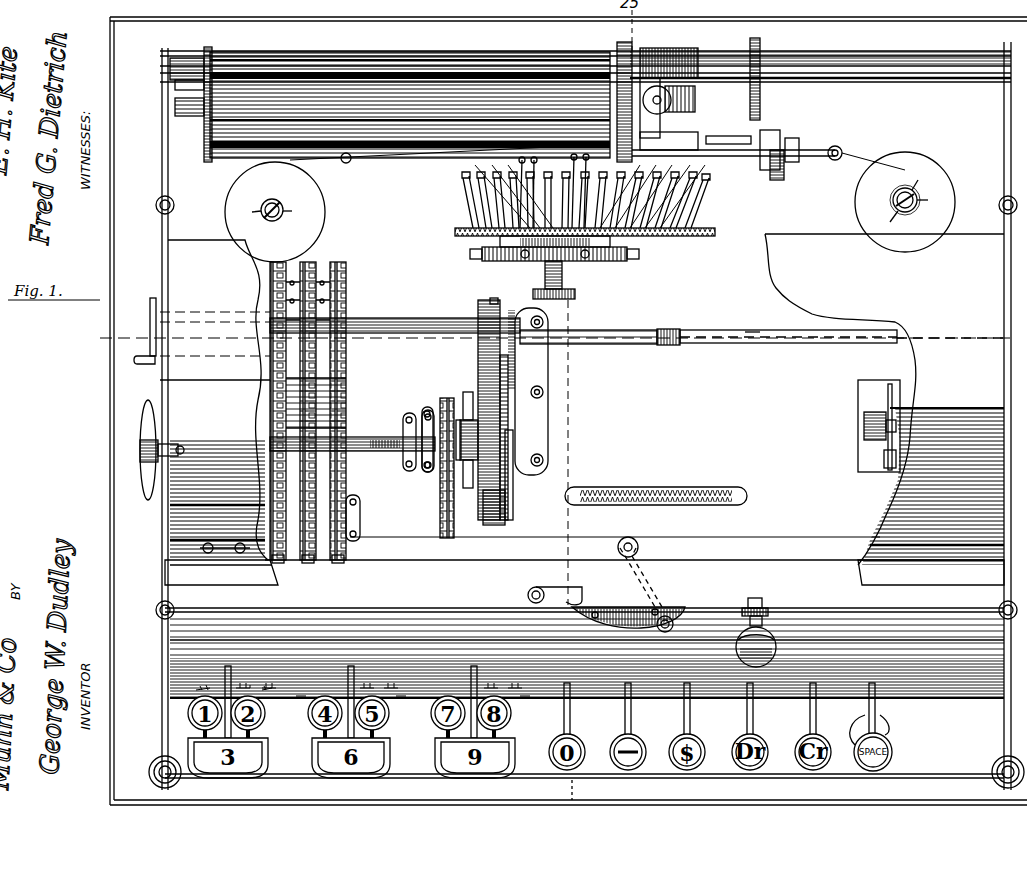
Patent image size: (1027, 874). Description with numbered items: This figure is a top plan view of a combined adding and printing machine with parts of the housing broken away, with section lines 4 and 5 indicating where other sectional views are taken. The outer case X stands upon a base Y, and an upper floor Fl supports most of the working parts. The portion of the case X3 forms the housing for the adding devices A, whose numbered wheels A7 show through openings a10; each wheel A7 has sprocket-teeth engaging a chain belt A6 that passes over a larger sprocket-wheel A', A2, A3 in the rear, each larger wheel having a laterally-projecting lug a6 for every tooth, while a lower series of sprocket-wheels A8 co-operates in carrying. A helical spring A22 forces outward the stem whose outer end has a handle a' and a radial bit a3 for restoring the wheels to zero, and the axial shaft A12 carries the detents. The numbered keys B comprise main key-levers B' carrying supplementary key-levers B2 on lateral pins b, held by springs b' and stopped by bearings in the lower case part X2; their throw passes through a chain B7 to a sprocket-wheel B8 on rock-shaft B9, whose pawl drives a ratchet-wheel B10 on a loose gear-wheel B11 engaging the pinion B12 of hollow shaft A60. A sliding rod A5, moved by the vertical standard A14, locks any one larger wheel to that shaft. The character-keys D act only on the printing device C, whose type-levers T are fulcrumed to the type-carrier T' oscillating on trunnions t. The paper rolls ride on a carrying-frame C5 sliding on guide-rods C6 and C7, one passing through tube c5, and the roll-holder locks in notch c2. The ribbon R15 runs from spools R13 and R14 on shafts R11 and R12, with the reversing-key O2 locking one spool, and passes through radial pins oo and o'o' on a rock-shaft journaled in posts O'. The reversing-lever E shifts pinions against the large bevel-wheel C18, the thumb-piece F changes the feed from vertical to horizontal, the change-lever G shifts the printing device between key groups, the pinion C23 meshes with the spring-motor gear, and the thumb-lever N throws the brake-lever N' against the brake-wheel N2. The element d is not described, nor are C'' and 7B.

The section line 4 is at (100, 340).
The guide-rod C6 is at (195, 55).
The guide-rod C7 is at (870, 83).
The platen cylinder C'' is at (418, 102).
The carrying-frame C5 is at (205, 115).
The lateral pins b is at (540, 423).
The upright posts O' is at (594, 153).
The type-writer ribbon R15 is at (393, 160).
The flat reversing-key O2 is at (272, 200).
The vertical spool-shaft R12 is at (245, 211).
The ribbon spool R14 is at (299, 211).
The vertical spool-shaft R11 is at (905, 202).
The notch c2 is at (920, 177).
The tube c5 is at (888, 223).
The ribbon spool R13 is at (912, 212).
The type-levers T is at (594, 196).
The radial pins oo is at (534, 158).
The radial pins o'o' is at (583, 165).
The vibrating type-carrier T' is at (585, 249).
The type writing or printing device C is at (593, 251).
The trunnions t is at (565, 275).
The housing part of casing X3 is at (586, 399).
The outer case X is at (634, 559).
The base Y is at (165, 563).
The larger sprocket-wheel A3 is at (277, 398).
The larger sprocket-wheel A2 is at (310, 398).
The larger sprocket-wheel A' is at (344, 398).
The laterally-projecting lug a6 is at (346, 283).
The axial shaft A12 is at (228, 306).
The hand-wheel or handle a' is at (143, 399).
The radial key or bit a3 is at (180, 442).
The adding devices A is at (172, 384).
The openings a10 is at (240, 545).
The hollow shaft A60 is at (410, 324).
The longitudinally-sliding rod A5 is at (618, 333).
The vertical standard A14 is at (718, 358).
The upper floor Fl is at (730, 386).
The chain belt A6 is at (348, 395).
The helical spring A22 is at (386, 436).
The sprocket-wheels A8 is at (348, 470).
The numbered wheels or disks A7 is at (284, 554).
The chain B7 is at (432, 500).
The sprocket-wheel B8 is at (452, 400).
The rock-shaft B9 is at (468, 425).
The ratchet-wheel B10 is at (487, 525).
The loose gear-wheel B11 is at (495, 520).
The pinion B12 is at (486, 300).
The gear 7B is at (460, 452).
The large bevel-wheel C18 is at (686, 488).
The brake-wheel N2 is at (875, 395).
The brake-lever N' is at (861, 427).
The change-lever G is at (528, 594).
The rigid pinion C23 is at (630, 540).
The reversing-lever E is at (662, 595).
The lower part of the case X2 is at (584, 619).
The thumb-piece F is at (775, 630).
The numbered keys B is at (587, 658).
The character-keys D is at (688, 680).
The key stem d is at (684, 702).
The main key-lever B' is at (354, 691).
The springs b' is at (379, 666).
The supplementary key-levers B2 is at (234, 676).
The thumb-lever N is at (879, 730).
The section line 5 is at (570, 796).